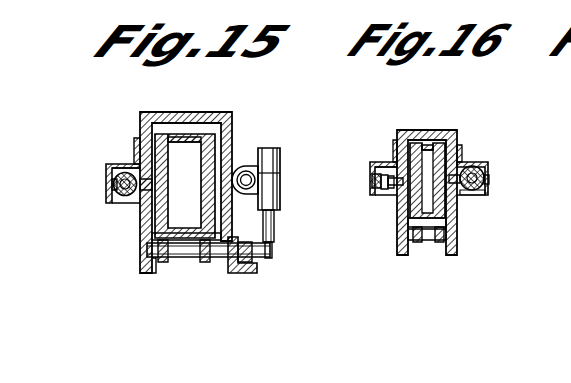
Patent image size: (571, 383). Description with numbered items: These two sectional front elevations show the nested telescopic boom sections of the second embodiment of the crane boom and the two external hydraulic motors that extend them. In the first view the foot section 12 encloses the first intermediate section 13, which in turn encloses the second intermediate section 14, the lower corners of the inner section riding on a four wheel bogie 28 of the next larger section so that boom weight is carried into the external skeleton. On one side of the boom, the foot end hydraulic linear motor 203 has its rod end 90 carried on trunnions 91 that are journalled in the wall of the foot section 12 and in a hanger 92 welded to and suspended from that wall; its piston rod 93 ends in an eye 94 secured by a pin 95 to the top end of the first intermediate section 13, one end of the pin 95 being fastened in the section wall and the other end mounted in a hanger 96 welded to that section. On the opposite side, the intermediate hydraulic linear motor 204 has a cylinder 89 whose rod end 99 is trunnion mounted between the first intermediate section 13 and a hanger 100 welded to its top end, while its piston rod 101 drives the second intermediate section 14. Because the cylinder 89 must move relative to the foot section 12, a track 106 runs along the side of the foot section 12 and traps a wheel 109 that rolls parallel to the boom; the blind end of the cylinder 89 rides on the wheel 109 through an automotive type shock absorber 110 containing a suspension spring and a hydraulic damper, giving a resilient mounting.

In FIG. 15, the foot section 12 is at (224, 109).
In FIG. 15, the first intermediate section 13 is at (224, 153).
In FIG. 16, the first intermediate section 13 is at (455, 122).
In FIG. 16, the second intermediate section 14 is at (429, 140).
In FIG. 15, the four wheel bogie 28 is at (171, 264).
In FIG. 15, the cylinder 89 is at (260, 172).
In FIG. 16, the cylinder 89 is at (474, 192).
In FIG. 15, the rod end 90 is at (123, 204).
In FIG. 15, the trunnions 91 is at (112, 185).
In FIG. 15, the hanger 92 is at (118, 163).
In FIG. 16, the piston rod 93 is at (381, 192).
In FIG. 16, the eye 94 is at (389, 192).
In FIG. 16, the pin 95 is at (373, 186).
In FIG. 16, the hanger 96 is at (383, 170).
In FIG. 16, the rod end 99 is at (484, 196).
In FIG. 16, the hanger 100 is at (484, 165).
In FIG. 16, the piston rod 101 is at (490, 176).
In FIG. 15, the track 106 is at (244, 273).
In FIG. 15, the wheel 109 is at (273, 248).
In FIG. 15, the shock absorber 110 is at (281, 151).
In FIG. 15, the foot end hydraulic linear motor 203 is at (131, 211).
In FIG. 16, the foot end hydraulic linear motor 203 is at (376, 169).
In FIG. 15, the intermediate hydraulic linear motor 204 is at (262, 185).
In FIG. 16, the intermediate hydraulic linear motor 204 is at (479, 161).